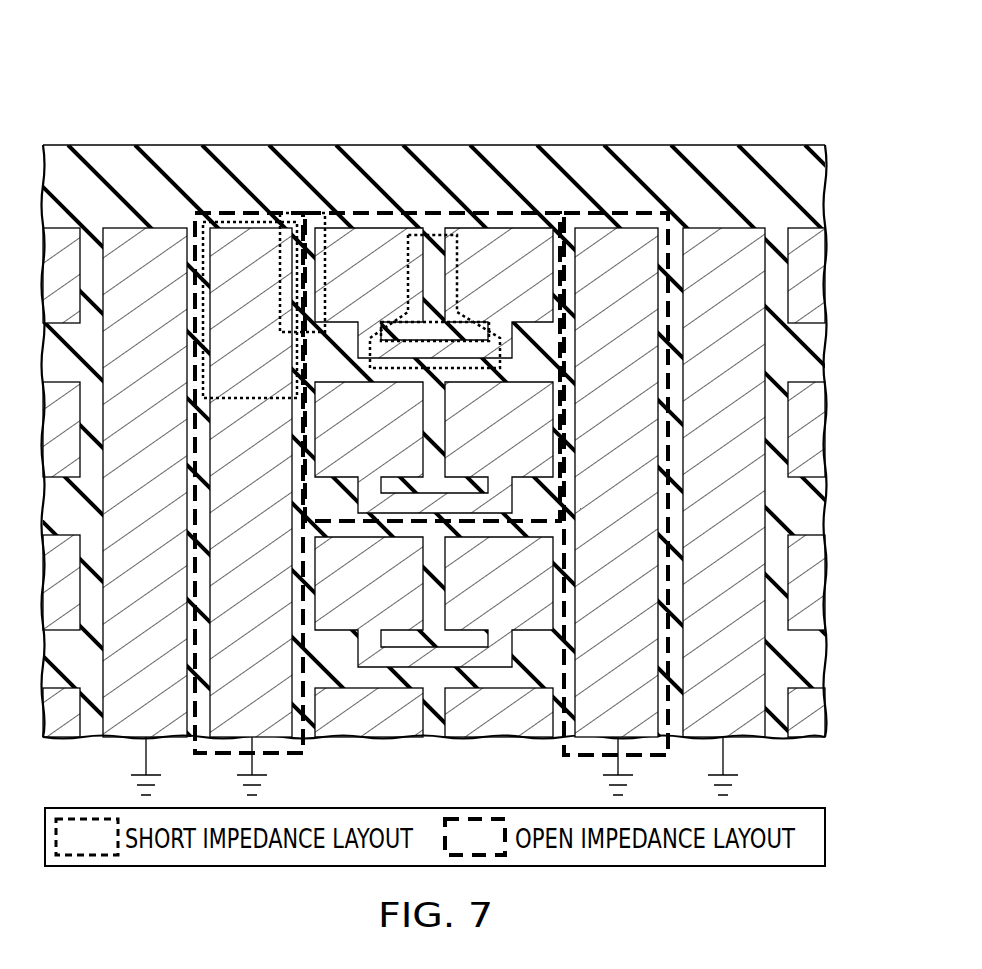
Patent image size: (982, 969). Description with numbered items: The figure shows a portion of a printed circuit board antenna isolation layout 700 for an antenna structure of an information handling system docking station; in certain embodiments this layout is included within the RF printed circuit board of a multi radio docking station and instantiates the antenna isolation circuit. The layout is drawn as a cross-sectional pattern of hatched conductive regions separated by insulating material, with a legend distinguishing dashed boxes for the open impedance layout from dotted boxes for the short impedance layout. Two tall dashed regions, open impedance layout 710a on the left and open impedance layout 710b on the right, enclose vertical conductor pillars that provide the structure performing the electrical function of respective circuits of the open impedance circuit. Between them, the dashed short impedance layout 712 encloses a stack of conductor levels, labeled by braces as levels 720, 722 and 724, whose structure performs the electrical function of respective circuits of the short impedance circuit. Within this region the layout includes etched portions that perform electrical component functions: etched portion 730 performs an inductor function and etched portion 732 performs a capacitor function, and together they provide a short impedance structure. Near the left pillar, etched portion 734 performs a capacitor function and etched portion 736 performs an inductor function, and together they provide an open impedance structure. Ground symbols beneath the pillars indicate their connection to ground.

The printed circuit board antenna isolation layout 700 is at (552, 70).
The open impedance layout 710a is at (232, 208).
The open impedance layout 710b is at (634, 208).
The short impedance layout 712 is at (361, 208).
The first metal layer structure 720 is at (588, 233).
The second metal layer structure 722 is at (588, 388).
The third metal layer structure 724 is at (588, 540).
The etched portion 730 is at (433, 232).
The etched portion 732 is at (499, 332).
The etched portion 734 is at (291, 210).
The etched portion 736 is at (240, 400).